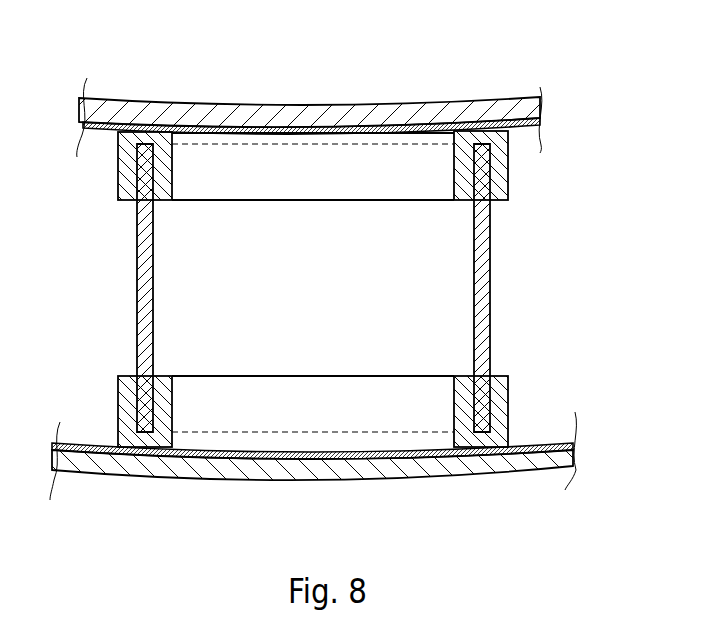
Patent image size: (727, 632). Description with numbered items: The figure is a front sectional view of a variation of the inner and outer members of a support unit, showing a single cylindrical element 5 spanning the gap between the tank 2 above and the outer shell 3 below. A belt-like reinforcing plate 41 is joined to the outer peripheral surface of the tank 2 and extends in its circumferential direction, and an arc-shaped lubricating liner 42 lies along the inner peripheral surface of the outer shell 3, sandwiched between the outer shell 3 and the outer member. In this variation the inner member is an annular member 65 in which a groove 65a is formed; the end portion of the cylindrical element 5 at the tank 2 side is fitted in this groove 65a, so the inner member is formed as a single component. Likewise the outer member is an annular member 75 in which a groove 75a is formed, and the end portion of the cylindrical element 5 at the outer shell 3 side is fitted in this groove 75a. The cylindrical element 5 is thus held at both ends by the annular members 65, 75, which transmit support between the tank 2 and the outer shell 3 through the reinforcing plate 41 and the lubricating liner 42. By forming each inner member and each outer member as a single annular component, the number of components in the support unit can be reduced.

The tank 2 is at (115, 113).
The reinforcing plate 41 is at (155, 128).
The lubricating liner 42 is at (80, 450).
The outer shell 3 is at (90, 462).
The cylindrical element 5 is at (420, 298).
The annular member 65 is at (463, 173).
The groove 65a is at (492, 220).
The annular member 75 is at (462, 397).
The groove 75a is at (492, 347).